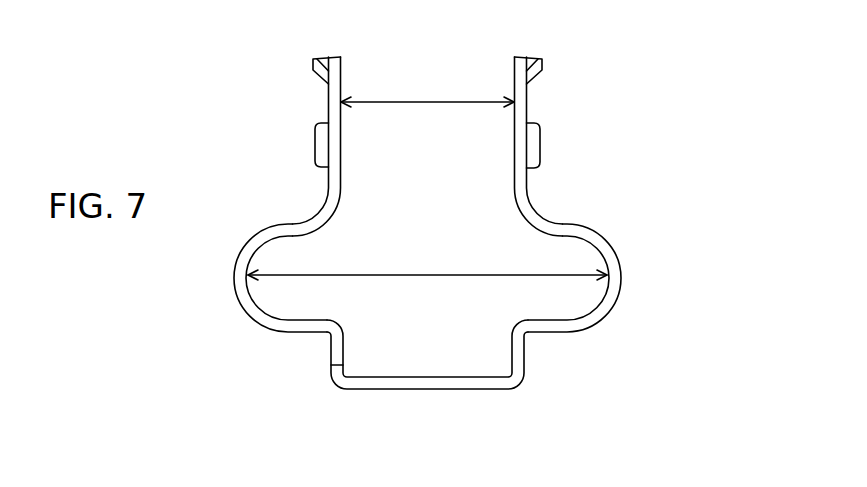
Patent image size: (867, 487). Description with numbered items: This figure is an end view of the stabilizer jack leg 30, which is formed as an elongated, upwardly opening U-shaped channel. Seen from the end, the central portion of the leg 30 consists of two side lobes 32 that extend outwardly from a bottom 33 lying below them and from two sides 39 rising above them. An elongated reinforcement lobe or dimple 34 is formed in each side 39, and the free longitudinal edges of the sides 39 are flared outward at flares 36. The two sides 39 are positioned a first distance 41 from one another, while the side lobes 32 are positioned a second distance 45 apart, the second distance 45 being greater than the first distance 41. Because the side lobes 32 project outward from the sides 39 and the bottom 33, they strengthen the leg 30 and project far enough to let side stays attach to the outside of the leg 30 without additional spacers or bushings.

The leg 30 is at (616, 84).
The side lobes 32 is at (237, 293).
The bottom 33 is at (467, 389).
The reinforcement lobe or dimple 34 is at (312, 147).
The flares 36 is at (542, 57).
The sides 39 is at (341, 143).
The first distance 41 is at (407, 103).
The second distance 45 is at (433, 267).